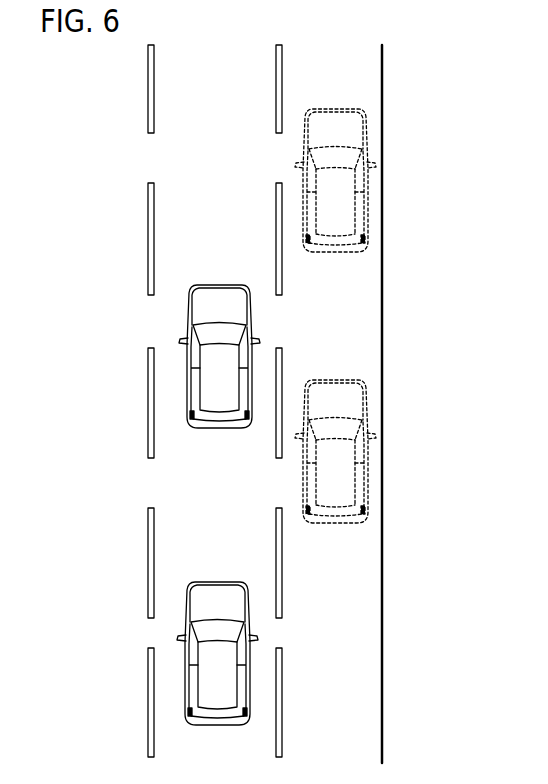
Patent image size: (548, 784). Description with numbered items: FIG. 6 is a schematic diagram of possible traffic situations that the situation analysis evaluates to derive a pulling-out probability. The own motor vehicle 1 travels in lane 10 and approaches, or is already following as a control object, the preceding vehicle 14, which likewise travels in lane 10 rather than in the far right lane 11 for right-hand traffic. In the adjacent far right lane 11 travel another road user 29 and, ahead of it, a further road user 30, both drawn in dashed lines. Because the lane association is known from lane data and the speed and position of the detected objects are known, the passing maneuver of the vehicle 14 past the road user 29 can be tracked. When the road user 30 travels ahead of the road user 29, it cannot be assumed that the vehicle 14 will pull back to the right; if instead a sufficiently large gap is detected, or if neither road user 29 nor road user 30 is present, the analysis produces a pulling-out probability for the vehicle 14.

The motor vehicle 1 is at (185, 683).
The preceding vehicle 14 is at (187, 377).
The road user 29 is at (368, 401).
The road user 30 is at (367, 141).
The lane 10 is at (229, 756).
The far right lane 11 is at (354, 756).